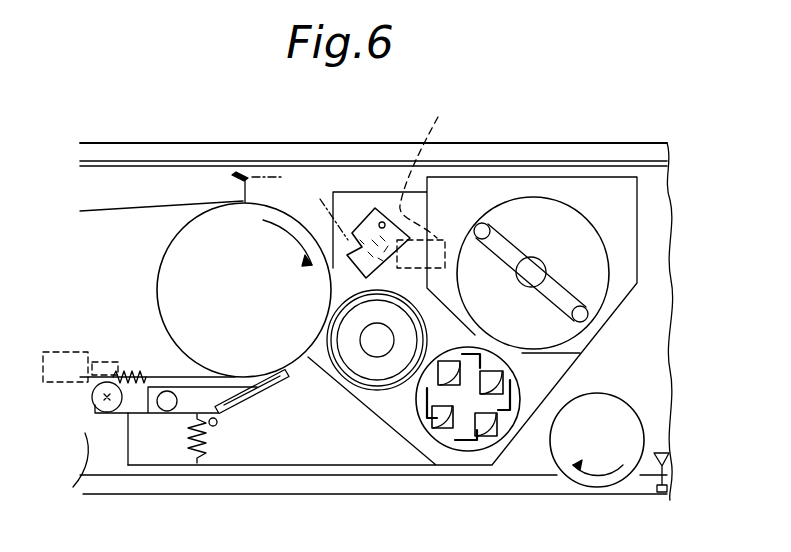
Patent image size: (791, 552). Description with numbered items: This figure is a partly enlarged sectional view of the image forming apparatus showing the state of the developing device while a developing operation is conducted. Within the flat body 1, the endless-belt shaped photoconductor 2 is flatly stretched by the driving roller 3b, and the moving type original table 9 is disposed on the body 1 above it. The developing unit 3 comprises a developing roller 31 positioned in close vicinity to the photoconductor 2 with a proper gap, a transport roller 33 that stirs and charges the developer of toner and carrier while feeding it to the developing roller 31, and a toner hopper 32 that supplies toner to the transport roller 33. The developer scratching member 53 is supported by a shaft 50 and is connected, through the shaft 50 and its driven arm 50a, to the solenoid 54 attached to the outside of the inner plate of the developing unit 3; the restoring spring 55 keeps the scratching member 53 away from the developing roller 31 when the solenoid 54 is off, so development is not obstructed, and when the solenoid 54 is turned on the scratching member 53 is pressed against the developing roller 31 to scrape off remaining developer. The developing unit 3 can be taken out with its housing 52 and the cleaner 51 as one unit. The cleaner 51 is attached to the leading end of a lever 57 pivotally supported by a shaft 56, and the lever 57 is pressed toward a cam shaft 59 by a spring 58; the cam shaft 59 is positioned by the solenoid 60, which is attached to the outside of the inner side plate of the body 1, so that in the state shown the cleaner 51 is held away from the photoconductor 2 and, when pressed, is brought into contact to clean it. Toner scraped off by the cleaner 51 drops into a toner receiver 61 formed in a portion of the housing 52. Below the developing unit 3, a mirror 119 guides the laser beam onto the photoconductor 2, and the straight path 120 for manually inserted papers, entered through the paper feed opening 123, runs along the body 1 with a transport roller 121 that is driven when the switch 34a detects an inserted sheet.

The body 1 is at (671, 284).
The photoconductor 2 is at (136, 205).
The developing unit 3 is at (645, 253).
The driving roller 3b is at (157, 295).
The original table 9 is at (494, 157).
The developing roller 31 is at (335, 380).
The toner hopper 32 is at (598, 237).
The transport roller 33 is at (415, 418).
The switch 34a is at (672, 457).
The shaft 50 is at (380, 222).
The driven arm 50a is at (436, 164).
The cleaner 51 is at (283, 385).
The housing 52 is at (516, 439).
The developer scratching member 53 is at (364, 279).
The solenoid 54 is at (434, 224).
The restoring spring 55 is at (300, 206).
The shaft 56 is at (167, 411).
The lever 57 is at (193, 387).
The spring 58 is at (203, 458).
The cam shaft 59 is at (92, 398).
The solenoid 60 is at (63, 352).
The toner receiver 61 is at (327, 465).
The mirror 119 is at (240, 172).
The straight path 120 is at (283, 494).
The transport roller 121 is at (615, 428).
The paper feed opening 123 is at (640, 475).